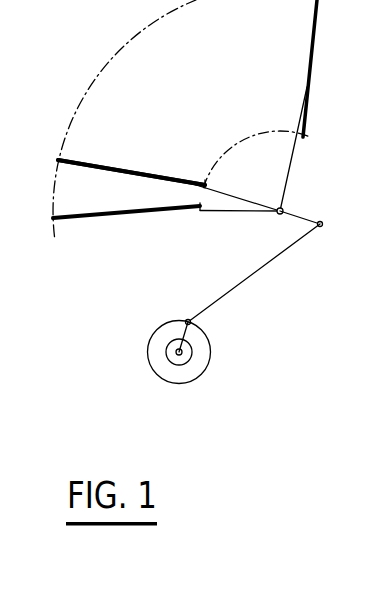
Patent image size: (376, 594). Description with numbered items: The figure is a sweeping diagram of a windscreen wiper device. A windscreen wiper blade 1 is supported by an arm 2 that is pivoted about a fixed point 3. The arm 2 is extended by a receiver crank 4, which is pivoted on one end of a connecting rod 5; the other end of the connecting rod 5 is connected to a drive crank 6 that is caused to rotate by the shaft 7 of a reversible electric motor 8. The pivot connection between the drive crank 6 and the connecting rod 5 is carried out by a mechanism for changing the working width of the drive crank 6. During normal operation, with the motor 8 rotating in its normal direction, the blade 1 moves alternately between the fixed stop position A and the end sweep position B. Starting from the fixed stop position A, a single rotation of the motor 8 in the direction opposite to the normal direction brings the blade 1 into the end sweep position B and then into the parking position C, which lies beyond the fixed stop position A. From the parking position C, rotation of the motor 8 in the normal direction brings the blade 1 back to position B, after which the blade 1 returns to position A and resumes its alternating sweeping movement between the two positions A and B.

The windscreen wiper blade 1 is at (184, 178).
The arm 2 is at (238, 197).
The fixed point 3 is at (287, 206).
The receiver crank 4 is at (303, 217).
The connecting rod 5 is at (272, 261).
The drive crank 6 is at (190, 330).
The shaft 7 is at (190, 358).
The reversible electric motor 8 is at (167, 355).
The fixed stop position A is at (90, 160).
The end sweep position B is at (314, 22).
The parking position C is at (78, 220).